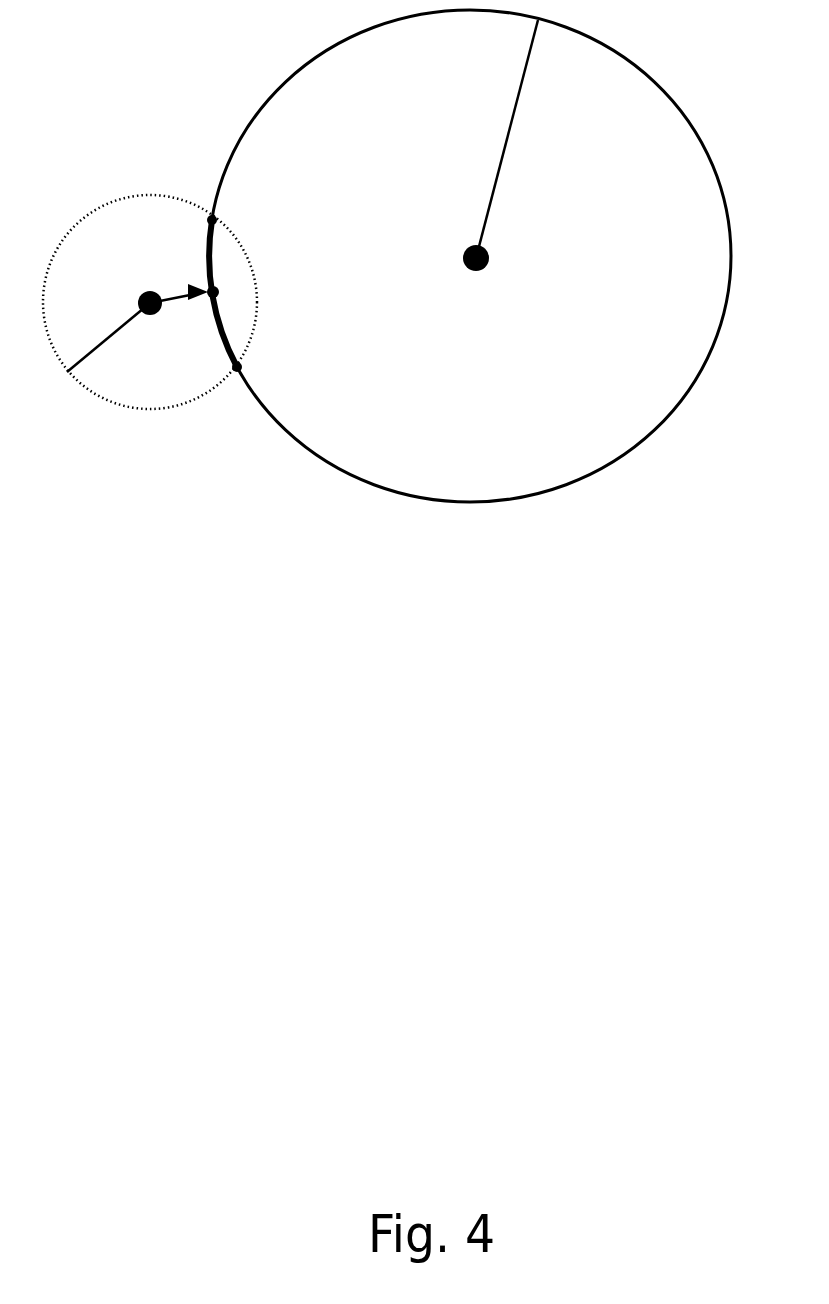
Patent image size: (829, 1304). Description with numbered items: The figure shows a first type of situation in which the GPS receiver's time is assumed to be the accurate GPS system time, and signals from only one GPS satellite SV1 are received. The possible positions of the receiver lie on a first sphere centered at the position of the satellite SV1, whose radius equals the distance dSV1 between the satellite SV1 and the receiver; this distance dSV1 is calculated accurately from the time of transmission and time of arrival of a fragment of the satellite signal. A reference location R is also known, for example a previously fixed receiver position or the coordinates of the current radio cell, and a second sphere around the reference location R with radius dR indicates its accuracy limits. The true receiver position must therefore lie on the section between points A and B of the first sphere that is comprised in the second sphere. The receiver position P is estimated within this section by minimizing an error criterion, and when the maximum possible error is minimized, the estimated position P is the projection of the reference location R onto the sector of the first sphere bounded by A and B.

The GPS satellite SV1 is at (470, 256).
The distance between the satellite and the GPS receiver dSV1 is at (493, 139).
The reference location R is at (150, 302).
The radius of the second sphere dR is at (108, 341).
The endpoint of section AB of the first sphere A is at (203, 198).
The estimated receiver position P is at (204, 313).
The endpoint of section AB of the first sphere B is at (241, 388).